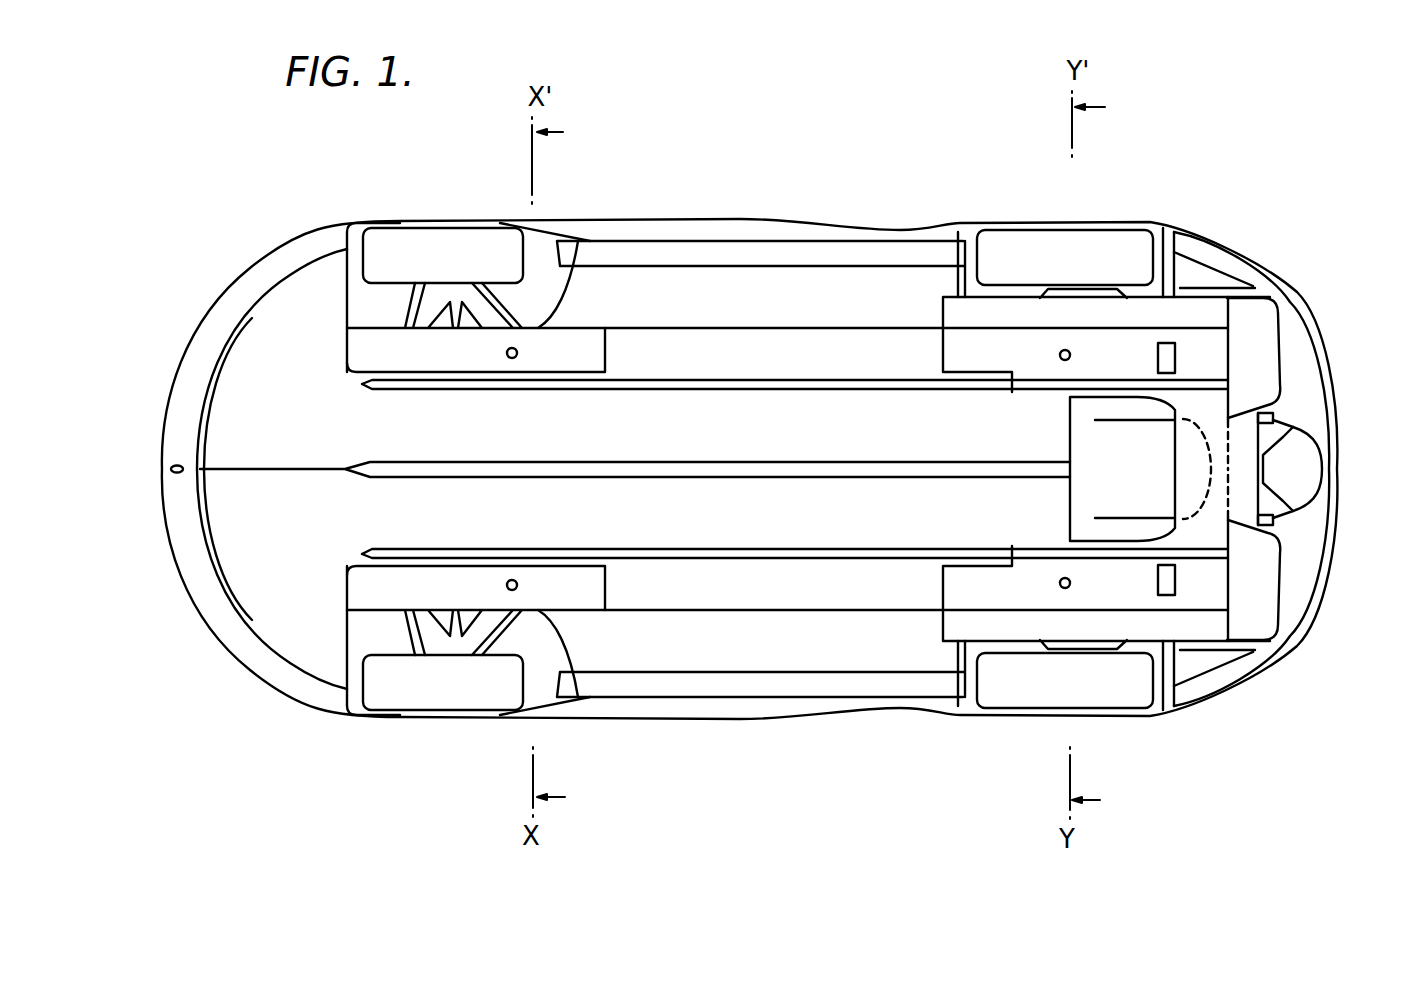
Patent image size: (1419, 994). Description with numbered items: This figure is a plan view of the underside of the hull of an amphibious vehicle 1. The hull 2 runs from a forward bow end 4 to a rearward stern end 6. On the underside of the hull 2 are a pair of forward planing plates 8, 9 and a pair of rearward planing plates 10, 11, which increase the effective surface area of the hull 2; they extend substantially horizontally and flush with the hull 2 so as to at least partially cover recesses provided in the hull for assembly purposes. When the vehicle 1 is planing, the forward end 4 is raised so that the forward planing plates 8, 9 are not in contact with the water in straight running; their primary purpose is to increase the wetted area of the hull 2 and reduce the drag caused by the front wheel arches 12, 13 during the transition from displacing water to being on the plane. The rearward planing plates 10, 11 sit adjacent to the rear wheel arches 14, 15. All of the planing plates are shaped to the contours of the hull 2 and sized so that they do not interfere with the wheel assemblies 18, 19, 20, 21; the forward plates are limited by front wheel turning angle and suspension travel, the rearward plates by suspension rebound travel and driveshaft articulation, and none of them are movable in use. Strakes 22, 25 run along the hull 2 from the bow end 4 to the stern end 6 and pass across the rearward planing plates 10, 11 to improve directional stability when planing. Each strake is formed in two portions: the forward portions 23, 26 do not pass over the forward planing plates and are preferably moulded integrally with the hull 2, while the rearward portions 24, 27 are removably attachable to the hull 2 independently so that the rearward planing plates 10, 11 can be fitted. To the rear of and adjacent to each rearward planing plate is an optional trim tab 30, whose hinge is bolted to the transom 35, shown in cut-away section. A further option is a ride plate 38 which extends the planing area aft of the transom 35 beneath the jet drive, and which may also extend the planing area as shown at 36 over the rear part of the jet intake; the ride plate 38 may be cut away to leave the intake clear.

The amphibious vehicle 1 is at (305, 190).
The hull 2 is at (160, 490).
The forward bow end 4 is at (162, 467).
The rearward stern end 6 is at (1332, 562).
The forward planing plate 8 is at (583, 593).
The forward planing plate 9 is at (390, 343).
The rearward planing plate 10 is at (967, 618).
The rearward planing plate 11 is at (1150, 307).
The front wheel arch 12 is at (527, 633).
The front wheel arch 13 is at (543, 255).
The wheel arch 14 is at (980, 690).
The wheel arch 15 is at (975, 228).
The wheel assembly 18 is at (408, 690).
The wheel assembly 19 is at (455, 240).
The wheel assembly 20 is at (1010, 228).
The wheel assembly 21 is at (1090, 690).
The strake 22 is at (733, 555).
The forward portion 23 is at (363, 553).
The rearward portion 24 is at (1130, 555).
The strake 25 is at (787, 380).
The forward portion 26 is at (365, 383).
The rearward portion 27 is at (1203, 385).
The trim tab 30 is at (1255, 598).
The transom 35 is at (1233, 347).
The planing area extension 36 is at (1190, 452).
The ride plate 38 is at (1247, 502).